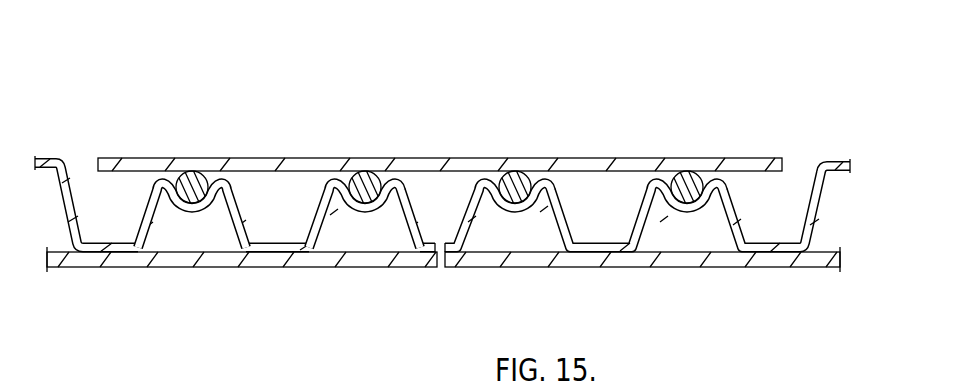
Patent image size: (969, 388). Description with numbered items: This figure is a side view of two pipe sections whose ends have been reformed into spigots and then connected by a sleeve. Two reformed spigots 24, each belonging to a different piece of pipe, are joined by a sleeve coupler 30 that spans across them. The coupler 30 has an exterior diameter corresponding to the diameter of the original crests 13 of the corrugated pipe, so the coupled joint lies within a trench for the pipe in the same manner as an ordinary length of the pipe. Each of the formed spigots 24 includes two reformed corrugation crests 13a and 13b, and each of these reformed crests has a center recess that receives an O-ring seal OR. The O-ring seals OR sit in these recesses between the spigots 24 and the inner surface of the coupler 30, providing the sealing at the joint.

The original crests 13 is at (51, 157).
The reformed corrugation crest 13a is at (178, 218).
The reformed corrugation crest 13b is at (357, 218).
The reformed spigot 24 is at (319, 282).
The sleeve coupler 30 is at (280, 157).
The O-ring seal OR is at (193, 171).